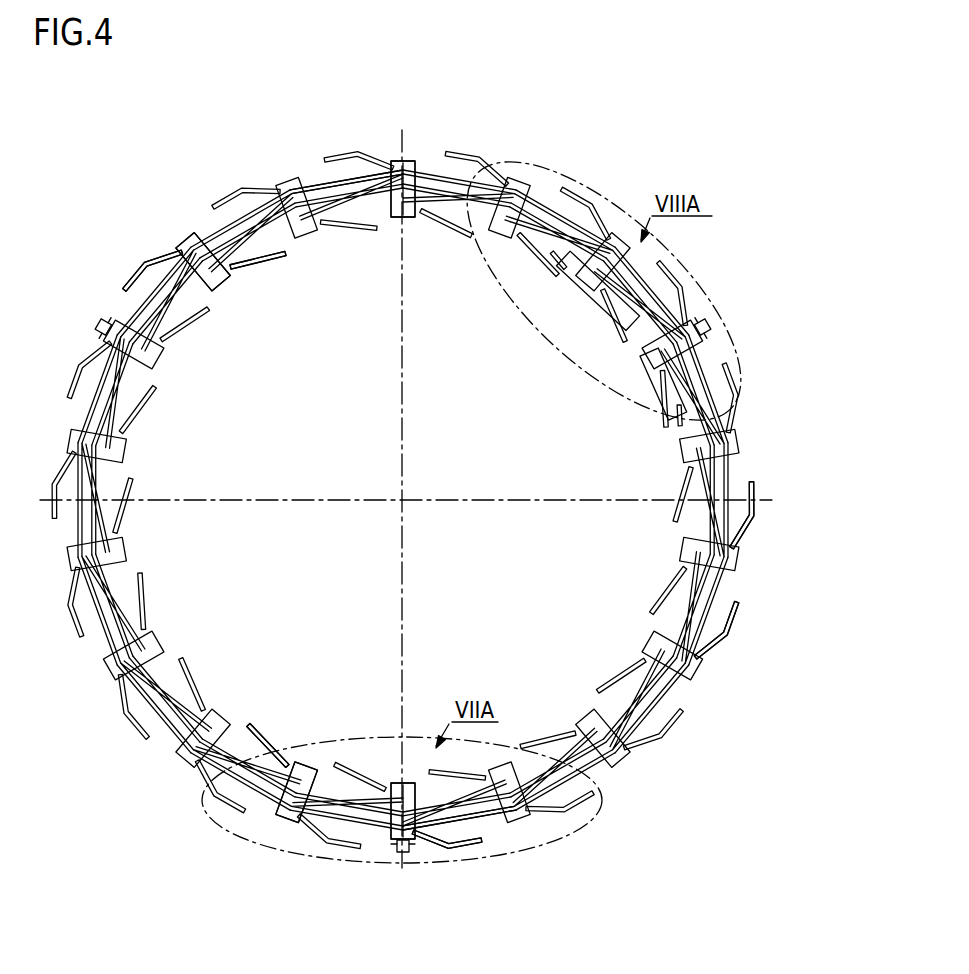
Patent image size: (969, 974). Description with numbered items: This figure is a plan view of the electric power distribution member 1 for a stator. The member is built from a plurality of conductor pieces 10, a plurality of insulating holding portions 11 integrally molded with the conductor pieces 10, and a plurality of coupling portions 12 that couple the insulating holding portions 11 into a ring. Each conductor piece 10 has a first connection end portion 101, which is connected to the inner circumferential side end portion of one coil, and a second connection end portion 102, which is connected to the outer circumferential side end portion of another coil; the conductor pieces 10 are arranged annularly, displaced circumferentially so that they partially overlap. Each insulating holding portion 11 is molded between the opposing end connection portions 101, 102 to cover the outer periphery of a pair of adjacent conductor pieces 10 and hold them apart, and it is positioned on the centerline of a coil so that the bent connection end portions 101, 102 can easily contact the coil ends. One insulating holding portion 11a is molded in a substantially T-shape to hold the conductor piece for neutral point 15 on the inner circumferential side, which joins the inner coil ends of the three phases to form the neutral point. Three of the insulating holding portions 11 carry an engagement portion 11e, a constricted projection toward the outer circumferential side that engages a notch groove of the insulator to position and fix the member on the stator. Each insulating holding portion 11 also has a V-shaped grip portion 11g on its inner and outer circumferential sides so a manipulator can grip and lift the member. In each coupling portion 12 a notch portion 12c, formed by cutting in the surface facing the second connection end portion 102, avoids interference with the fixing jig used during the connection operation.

The electric power distribution member 1 is at (232, 160).
The conductor piece 10 is at (152, 266).
The first connection end portion 101 is at (253, 727).
The second connection end portion 102 is at (474, 841).
The insulating holding portion 11 is at (213, 275).
The insulating holding portion (T-shaped) 11a is at (654, 366).
The engagement portion 11e is at (100, 322).
The grip portion 11g is at (672, 690).
The coupling portion 12 is at (374, 184).
The notch portion 12c is at (333, 184).
The conductor piece for neutral point 15 is at (553, 257).